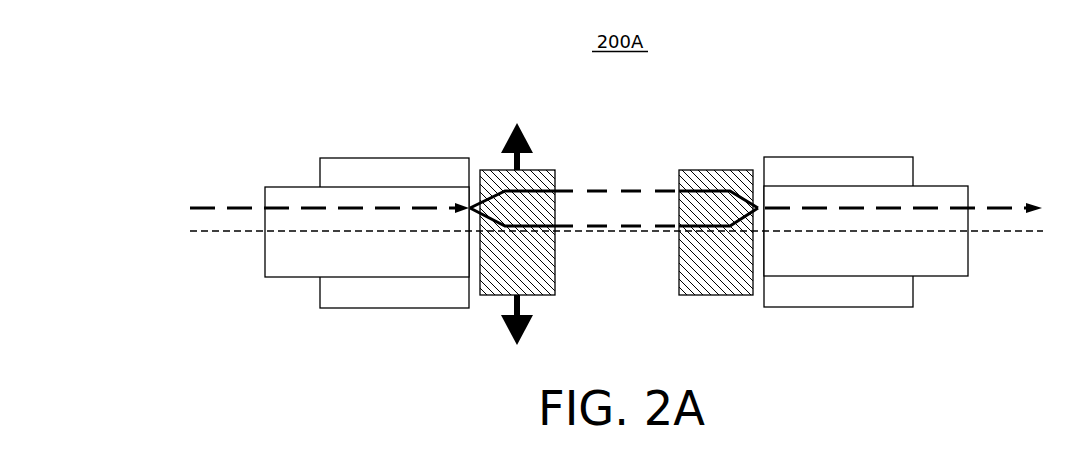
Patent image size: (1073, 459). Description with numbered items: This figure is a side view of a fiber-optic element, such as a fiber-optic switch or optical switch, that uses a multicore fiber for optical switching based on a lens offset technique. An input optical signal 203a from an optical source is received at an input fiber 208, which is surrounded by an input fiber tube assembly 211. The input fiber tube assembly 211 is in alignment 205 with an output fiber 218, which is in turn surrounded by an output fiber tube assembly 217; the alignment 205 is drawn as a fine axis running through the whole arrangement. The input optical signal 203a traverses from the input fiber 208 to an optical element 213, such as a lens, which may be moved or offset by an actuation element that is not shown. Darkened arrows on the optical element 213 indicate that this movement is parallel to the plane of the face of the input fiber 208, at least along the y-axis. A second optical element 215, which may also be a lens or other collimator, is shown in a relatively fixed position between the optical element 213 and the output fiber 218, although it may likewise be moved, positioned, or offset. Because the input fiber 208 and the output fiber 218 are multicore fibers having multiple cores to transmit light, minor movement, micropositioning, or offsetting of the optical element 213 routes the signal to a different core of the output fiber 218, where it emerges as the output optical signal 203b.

The input optical signal 203a is at (252, 208).
The output optical signal 203b is at (998, 208).
The alignment 205 is at (222, 232).
The input fiber 208 is at (310, 187).
The input fiber tube assembly 211 is at (407, 158).
The optical element 213 is at (542, 170).
The optical element 215 is at (723, 170).
The output fiber tube assembly 217 is at (827, 157).
The output fiber 218 is at (927, 186).